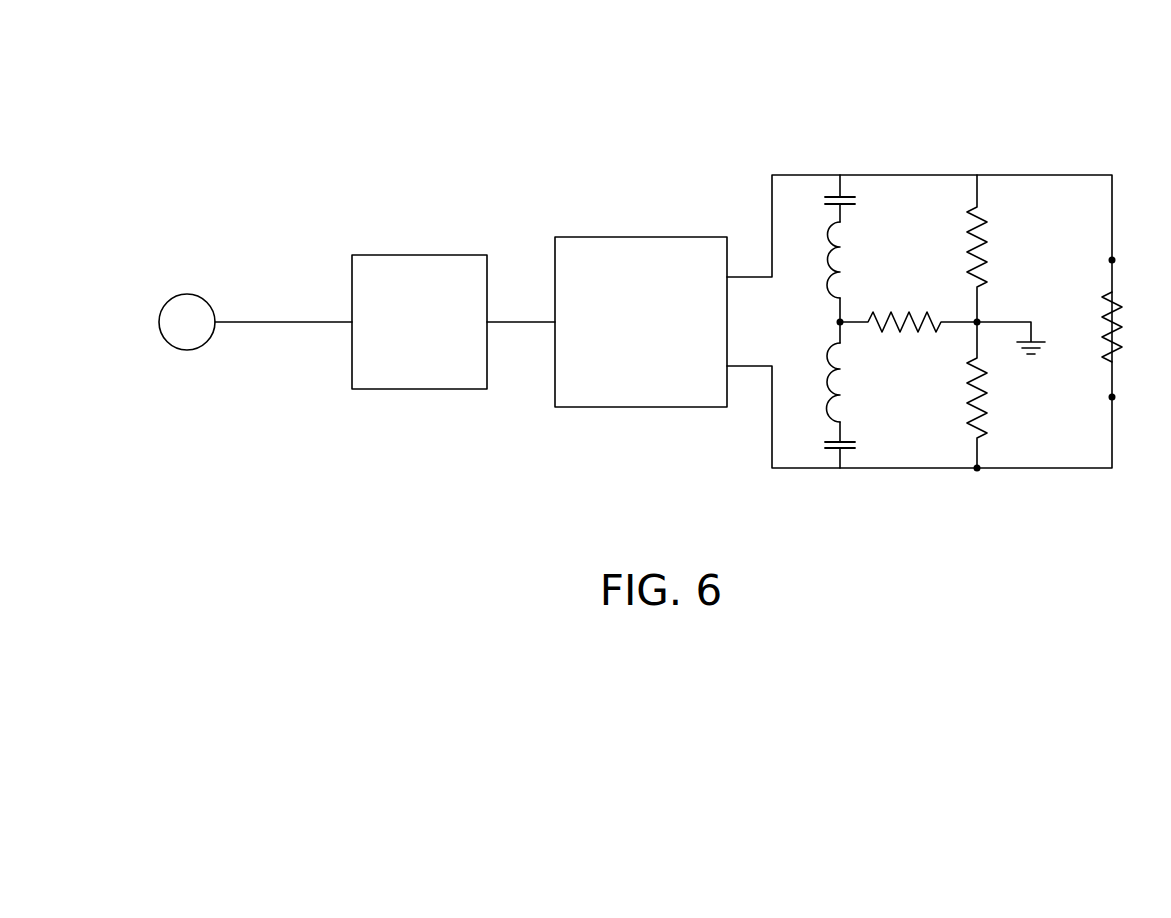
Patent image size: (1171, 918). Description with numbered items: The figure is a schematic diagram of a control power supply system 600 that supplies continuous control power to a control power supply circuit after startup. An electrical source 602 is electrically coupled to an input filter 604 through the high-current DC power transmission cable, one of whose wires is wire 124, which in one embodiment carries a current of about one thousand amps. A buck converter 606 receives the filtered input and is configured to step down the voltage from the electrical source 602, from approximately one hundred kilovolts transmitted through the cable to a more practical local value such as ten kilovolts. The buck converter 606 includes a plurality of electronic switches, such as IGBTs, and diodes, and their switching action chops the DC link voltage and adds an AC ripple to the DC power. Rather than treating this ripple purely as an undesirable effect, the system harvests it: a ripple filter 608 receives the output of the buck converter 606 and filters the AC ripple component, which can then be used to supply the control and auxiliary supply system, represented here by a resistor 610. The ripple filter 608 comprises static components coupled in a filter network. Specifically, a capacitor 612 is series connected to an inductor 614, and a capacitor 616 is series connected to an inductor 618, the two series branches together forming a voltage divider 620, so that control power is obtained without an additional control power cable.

The control power supply system 600 is at (533, 73).
The electrical source 602 is at (186, 294).
The wire 124 is at (283, 320).
The input filter 604 is at (420, 255).
The buck converter 606 is at (640, 236).
The voltage divider 620 is at (836, 151).
The capacitor 612 is at (849, 206).
The inductor 614 is at (838, 283).
The inductor 618 is at (838, 382).
The capacitor 616 is at (848, 440).
The ripple filter 608 is at (972, 151).
The resistor 610 is at (1118, 304).